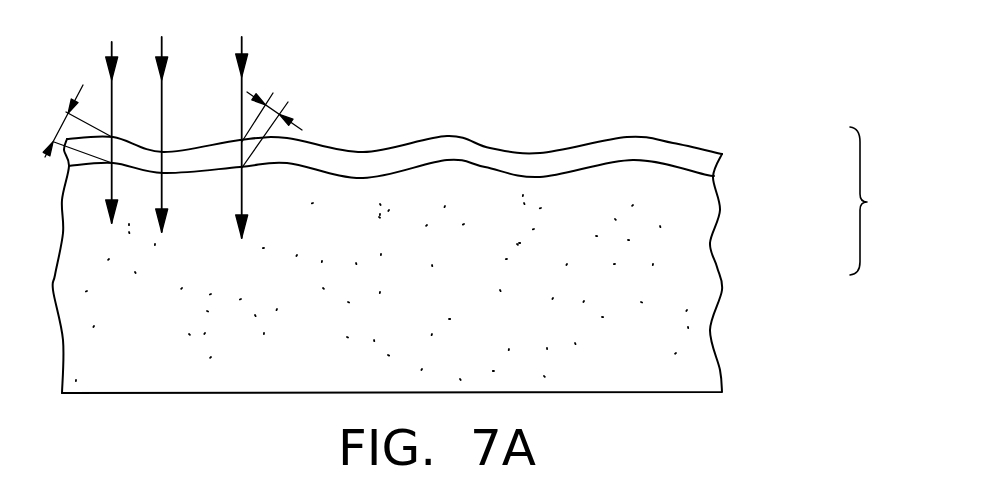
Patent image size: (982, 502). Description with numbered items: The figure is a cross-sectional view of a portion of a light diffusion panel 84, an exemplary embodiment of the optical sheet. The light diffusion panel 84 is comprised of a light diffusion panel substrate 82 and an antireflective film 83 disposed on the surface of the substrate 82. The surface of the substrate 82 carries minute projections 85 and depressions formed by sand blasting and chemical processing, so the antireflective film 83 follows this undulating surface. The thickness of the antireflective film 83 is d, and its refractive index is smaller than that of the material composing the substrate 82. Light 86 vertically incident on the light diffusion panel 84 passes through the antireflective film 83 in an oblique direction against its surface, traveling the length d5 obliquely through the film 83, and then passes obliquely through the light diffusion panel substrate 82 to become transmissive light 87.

The light diffusion panel substrate 82 is at (690, 277).
The antireflective film 83 is at (707, 163).
The light diffusion panel 84 is at (912, 218).
The minute projections 85 is at (485, 167).
The vertically incident light 86 is at (175, 120).
The transmissive light 87 is at (185, 237).
The thickness of the antireflective film d is at (75, 124).
The oblique path length through the antireflective film d5 is at (280, 117).